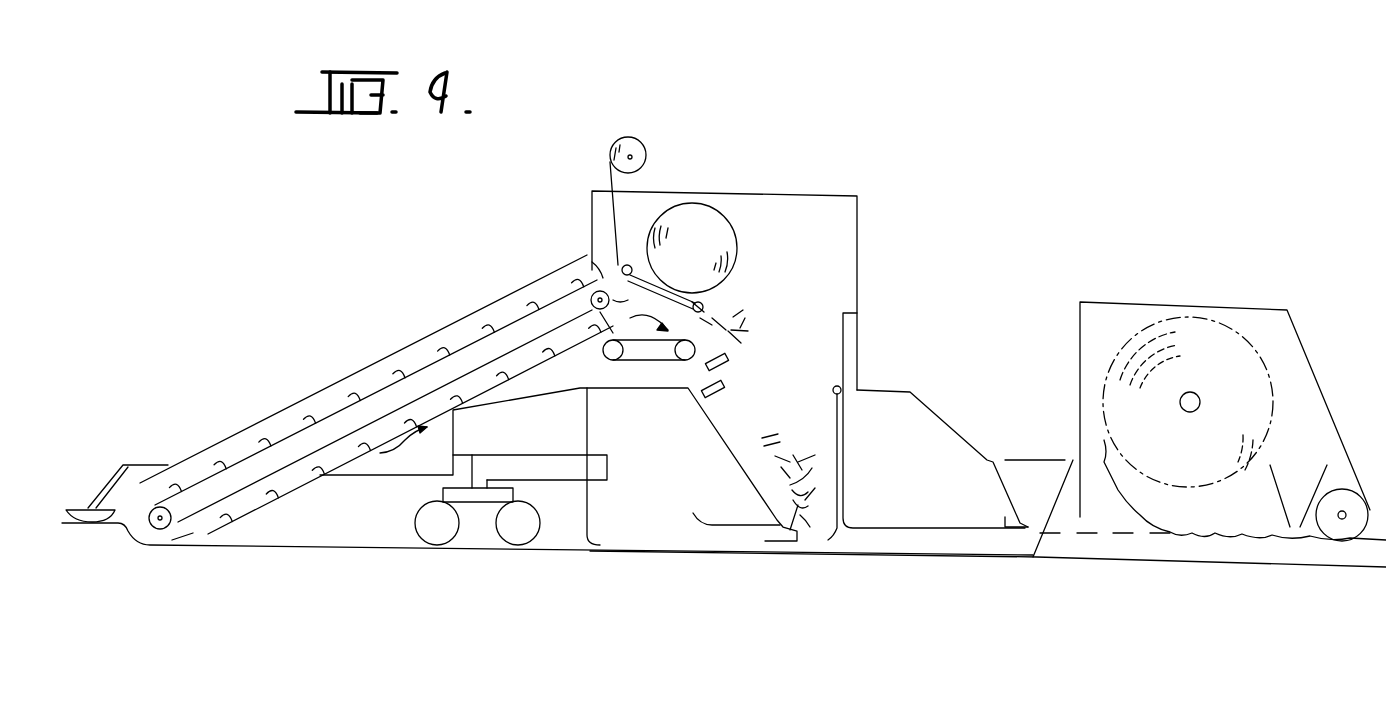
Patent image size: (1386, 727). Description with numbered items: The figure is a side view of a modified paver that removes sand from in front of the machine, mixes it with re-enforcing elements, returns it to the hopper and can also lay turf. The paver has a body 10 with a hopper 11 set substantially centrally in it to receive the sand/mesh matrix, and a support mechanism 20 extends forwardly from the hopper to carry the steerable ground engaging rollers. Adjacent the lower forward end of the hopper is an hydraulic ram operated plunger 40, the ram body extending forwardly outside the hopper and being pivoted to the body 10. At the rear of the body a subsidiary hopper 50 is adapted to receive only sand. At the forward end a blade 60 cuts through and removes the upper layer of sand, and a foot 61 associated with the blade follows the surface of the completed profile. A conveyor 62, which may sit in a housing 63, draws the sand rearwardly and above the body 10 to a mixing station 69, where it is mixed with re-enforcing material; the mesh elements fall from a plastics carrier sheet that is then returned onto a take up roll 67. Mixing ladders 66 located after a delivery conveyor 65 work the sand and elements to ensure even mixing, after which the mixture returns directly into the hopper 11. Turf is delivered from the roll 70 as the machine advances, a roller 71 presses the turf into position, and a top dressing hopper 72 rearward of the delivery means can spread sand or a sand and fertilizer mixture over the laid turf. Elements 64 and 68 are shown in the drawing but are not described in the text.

The body 10 is at (885, 358).
The hopper 11 is at (813, 428).
The support mechanism 20 is at (500, 556).
The hydraulic ram operated plunger 40 is at (777, 537).
The subsidiary hopper 50 is at (1039, 452).
The blade 60 is at (165, 548).
The foot 61 is at (82, 508).
The conveyor 62 is at (297, 450).
The housing 63 is at (497, 300).
The housing 64 is at (822, 264).
The delivery conveyor 65 is at (660, 355).
The mixing ladders 66 is at (736, 375).
The take up roll 67 is at (645, 140).
The press roller 68 is at (697, 205).
The mixing station 69 is at (747, 320).
The roll 70 is at (1193, 348).
The roller 71 is at (1342, 541).
The top dressing hopper 72 is at (1300, 483).